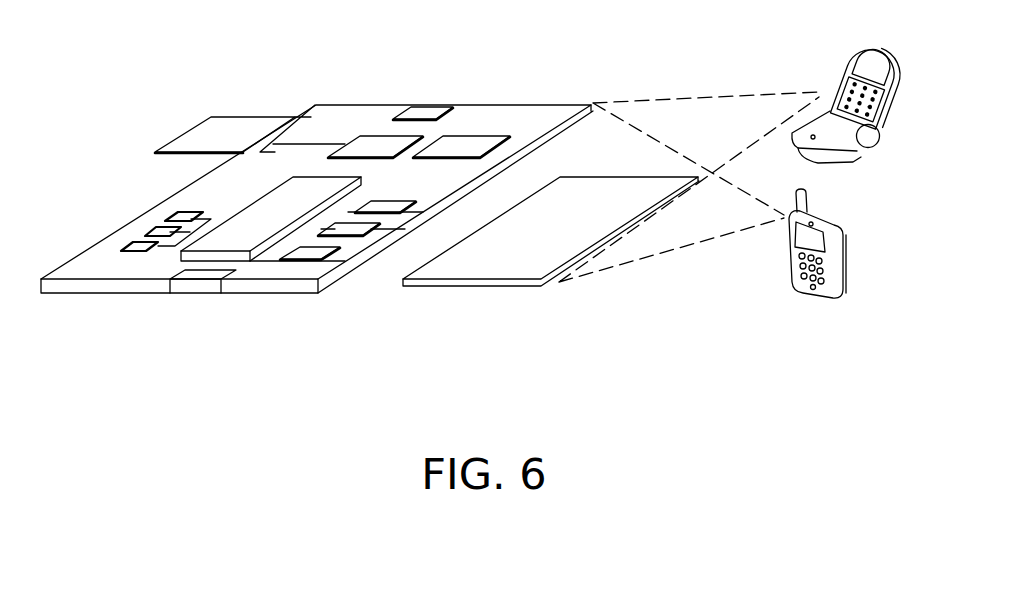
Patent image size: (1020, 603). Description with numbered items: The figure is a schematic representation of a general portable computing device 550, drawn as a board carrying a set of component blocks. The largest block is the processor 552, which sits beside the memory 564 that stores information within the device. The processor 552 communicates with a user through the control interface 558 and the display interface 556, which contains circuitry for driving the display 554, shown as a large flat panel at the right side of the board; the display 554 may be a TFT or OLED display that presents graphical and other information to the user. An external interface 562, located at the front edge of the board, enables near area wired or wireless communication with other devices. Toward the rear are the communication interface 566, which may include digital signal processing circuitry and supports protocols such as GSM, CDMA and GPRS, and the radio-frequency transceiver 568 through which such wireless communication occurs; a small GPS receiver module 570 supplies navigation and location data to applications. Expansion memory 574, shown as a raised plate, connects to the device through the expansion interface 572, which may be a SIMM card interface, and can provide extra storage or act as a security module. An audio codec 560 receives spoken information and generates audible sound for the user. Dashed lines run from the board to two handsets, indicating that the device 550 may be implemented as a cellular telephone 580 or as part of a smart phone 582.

The portable computing device 550 is at (88, 310).
The processor 552 is at (243, 240).
The display 554 is at (512, 258).
The display interface 556 is at (298, 260).
The control interface 558 is at (355, 231).
The audio codec 560 is at (388, 213).
The external interface 562 is at (195, 290).
The memory 564 is at (140, 235).
The communication interface 566 is at (365, 138).
The radio-frequency transceiver 568 is at (465, 147).
The GPS receiver module 570 is at (428, 110).
The expansion interface 572 is at (293, 117).
The expansion memory 574 is at (200, 123).
The cellular telephone 580 is at (850, 62).
The smart phone 582 is at (785, 251).